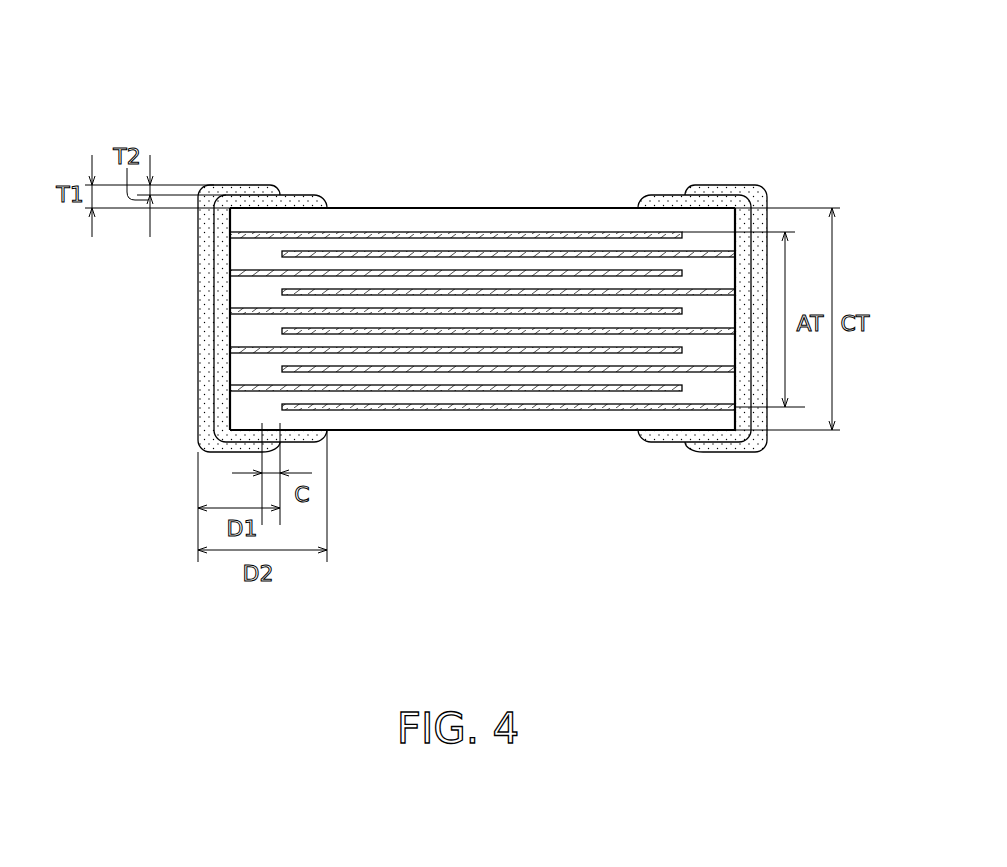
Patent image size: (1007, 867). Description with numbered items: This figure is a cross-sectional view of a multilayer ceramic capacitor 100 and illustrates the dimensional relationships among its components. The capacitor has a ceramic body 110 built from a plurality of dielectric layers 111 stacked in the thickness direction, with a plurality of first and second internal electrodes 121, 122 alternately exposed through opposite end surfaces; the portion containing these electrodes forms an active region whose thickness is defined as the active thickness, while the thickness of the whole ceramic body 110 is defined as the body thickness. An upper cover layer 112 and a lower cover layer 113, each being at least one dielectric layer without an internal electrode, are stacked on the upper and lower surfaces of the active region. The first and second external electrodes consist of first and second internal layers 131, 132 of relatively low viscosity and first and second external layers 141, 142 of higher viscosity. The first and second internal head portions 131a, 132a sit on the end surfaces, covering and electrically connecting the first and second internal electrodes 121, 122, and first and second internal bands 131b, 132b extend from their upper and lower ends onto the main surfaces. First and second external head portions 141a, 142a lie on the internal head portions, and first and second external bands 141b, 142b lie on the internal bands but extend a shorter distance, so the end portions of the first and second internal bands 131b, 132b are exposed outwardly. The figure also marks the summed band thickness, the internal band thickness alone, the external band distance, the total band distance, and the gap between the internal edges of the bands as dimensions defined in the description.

The multilayer ceramic capacitor 100 is at (127, 23).
The ceramic body 110 is at (573, 205).
The dielectric layers 111 is at (453, 243).
The upper cover layer 112 is at (358, 218).
The lower cover layer 113 is at (462, 423).
The first internal electrodes 121 is at (403, 233).
The second internal electrodes 122 is at (507, 253).
The first internal layer 131 is at (313, 97).
The first internal head portion 131a is at (212, 253).
The first internal band 131b is at (297, 197).
The second internal layer 132 is at (797, 100).
The second internal head portion 132a is at (745, 255).
The second internal band 132b is at (668, 202).
The first external layer 141 is at (88, 362).
The first external head portion 141a is at (203, 373).
The first external band 141b is at (242, 452).
The second external layer 142 is at (795, 541).
The second external head portion 142a is at (758, 383).
The second external band 142b is at (715, 447).